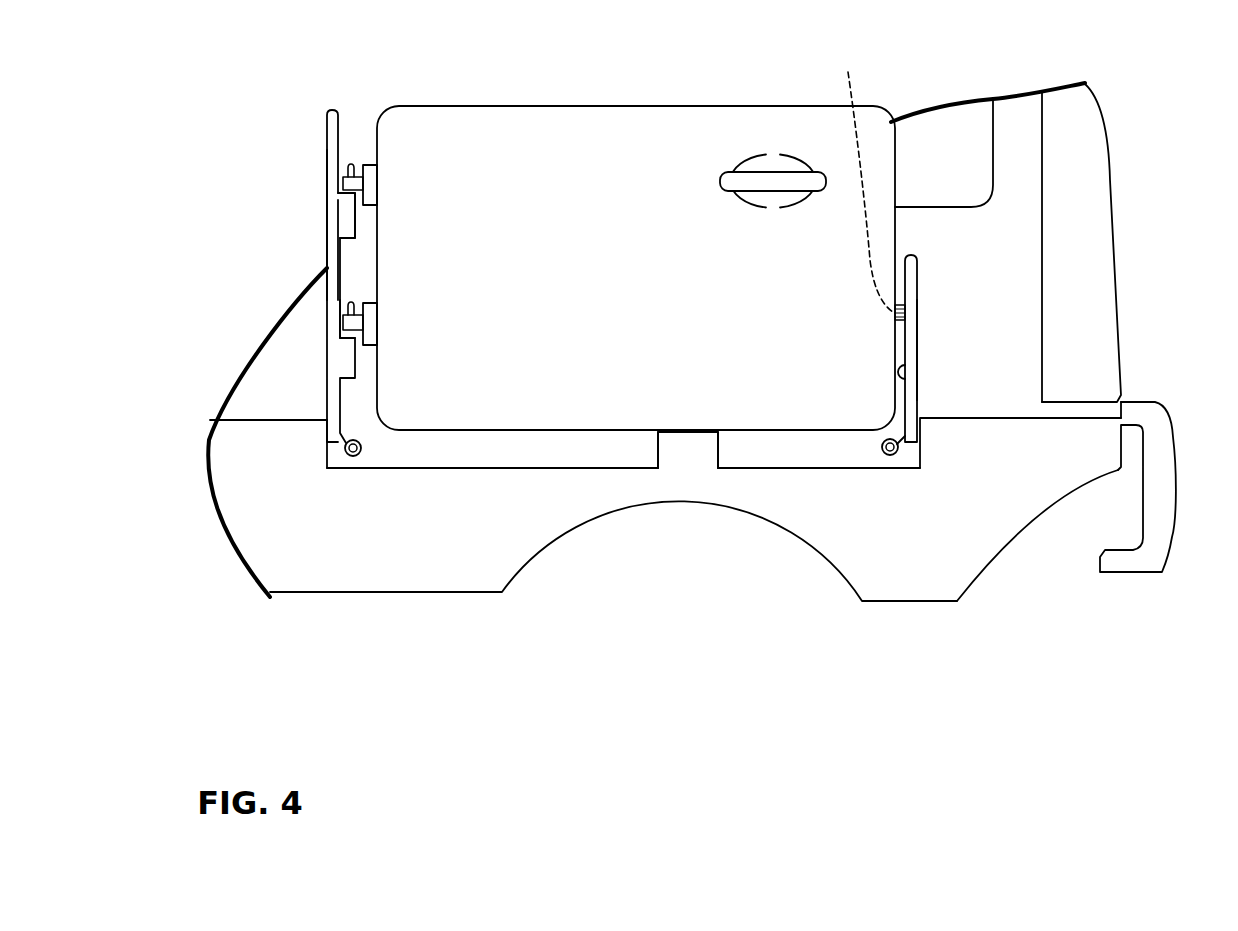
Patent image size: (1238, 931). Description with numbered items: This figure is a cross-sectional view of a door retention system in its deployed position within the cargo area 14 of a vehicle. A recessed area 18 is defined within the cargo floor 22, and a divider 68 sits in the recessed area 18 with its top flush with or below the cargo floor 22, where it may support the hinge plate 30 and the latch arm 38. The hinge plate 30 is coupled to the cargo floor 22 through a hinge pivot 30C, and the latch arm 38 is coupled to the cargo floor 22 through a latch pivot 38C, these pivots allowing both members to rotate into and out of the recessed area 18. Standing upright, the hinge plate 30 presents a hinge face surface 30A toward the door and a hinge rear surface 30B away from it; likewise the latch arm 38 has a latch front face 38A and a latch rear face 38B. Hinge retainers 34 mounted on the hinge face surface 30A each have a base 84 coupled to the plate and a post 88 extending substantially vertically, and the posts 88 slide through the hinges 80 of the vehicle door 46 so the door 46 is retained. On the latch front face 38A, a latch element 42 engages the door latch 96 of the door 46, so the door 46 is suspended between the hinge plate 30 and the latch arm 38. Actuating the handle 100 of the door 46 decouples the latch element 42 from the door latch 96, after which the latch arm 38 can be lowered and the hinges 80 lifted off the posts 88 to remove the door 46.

The cargo area 14 is at (998, 250).
The recessed area 18 is at (548, 472).
The cargo floor 22 is at (1018, 418).
The hinge plate 30 is at (322, 205).
The hinge face surface 30A is at (343, 276).
The hinge rear surface 30B is at (327, 323).
The hinge pivot 30C is at (354, 457).
The hinge retainer 34 is at (322, 182).
The latch arm 38 is at (920, 309).
The latch front face 38A is at (903, 363).
The latch rear face 38B is at (917, 343).
The latch pivot 38C is at (892, 456).
The latch element 42 is at (898, 303).
The vehicle door 46 is at (488, 150).
The divider 68 is at (686, 440).
The hinge 80 is at (372, 163).
The base 84 is at (343, 218).
The post 88 is at (350, 165).
The door latch 96 is at (864, 181).
The handle 100 is at (773, 177).